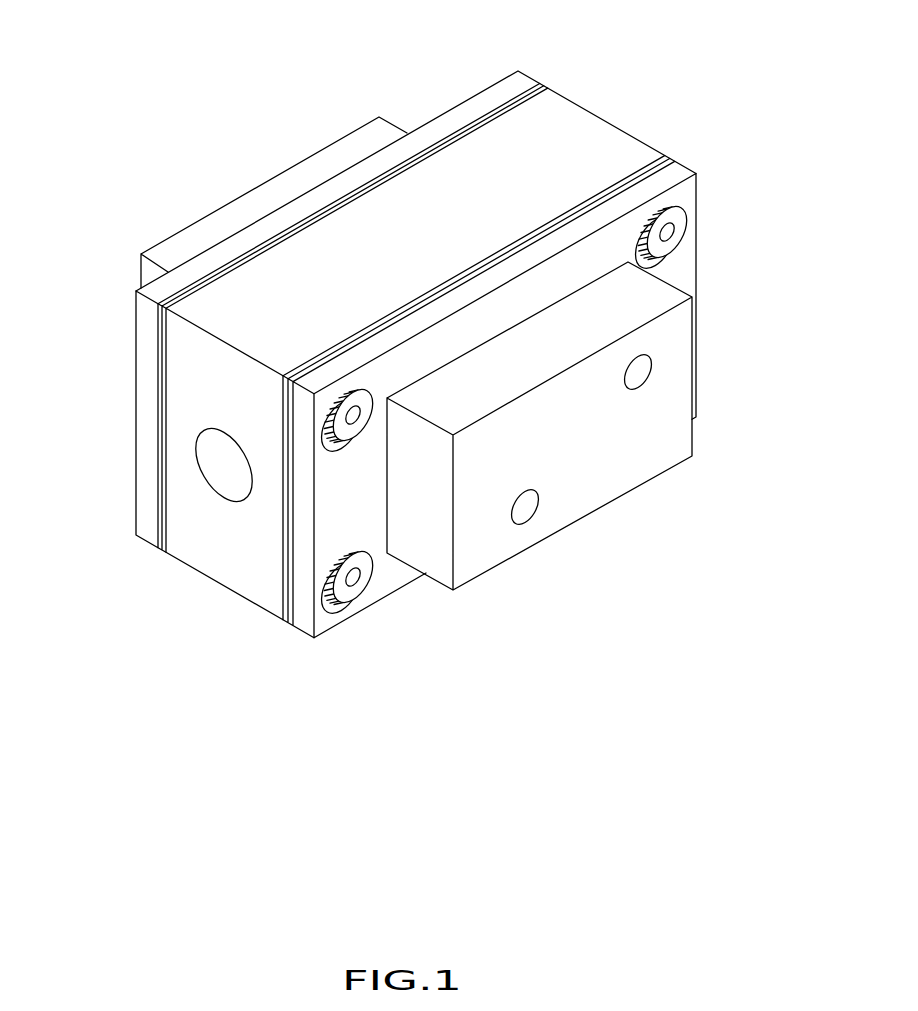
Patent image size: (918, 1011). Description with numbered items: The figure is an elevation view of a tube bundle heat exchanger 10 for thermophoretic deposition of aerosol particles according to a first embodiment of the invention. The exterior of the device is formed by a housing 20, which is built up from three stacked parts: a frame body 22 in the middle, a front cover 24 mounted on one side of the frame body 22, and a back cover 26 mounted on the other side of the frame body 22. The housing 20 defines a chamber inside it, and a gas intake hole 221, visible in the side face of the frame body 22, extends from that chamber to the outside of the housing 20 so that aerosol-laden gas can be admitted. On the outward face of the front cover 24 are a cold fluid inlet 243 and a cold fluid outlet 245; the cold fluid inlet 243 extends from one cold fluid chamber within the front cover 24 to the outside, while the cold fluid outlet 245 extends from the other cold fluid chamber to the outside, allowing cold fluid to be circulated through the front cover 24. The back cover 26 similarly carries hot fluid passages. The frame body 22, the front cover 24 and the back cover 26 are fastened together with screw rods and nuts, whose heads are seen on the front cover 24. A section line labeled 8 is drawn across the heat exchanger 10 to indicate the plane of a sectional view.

The tube bundle heat exchanger 10 is at (181, 134).
The section line 8- 8 is at (62, 476).
The housing 20 is at (407, 404).
The frame body 22 is at (242, 580).
The gas intake hole 221 is at (213, 455).
The front cover 24 is at (305, 628).
The cold fluid inlet 243 is at (648, 367).
The cold fluid outlet 245 is at (528, 506).
The back cover 26 is at (148, 530).